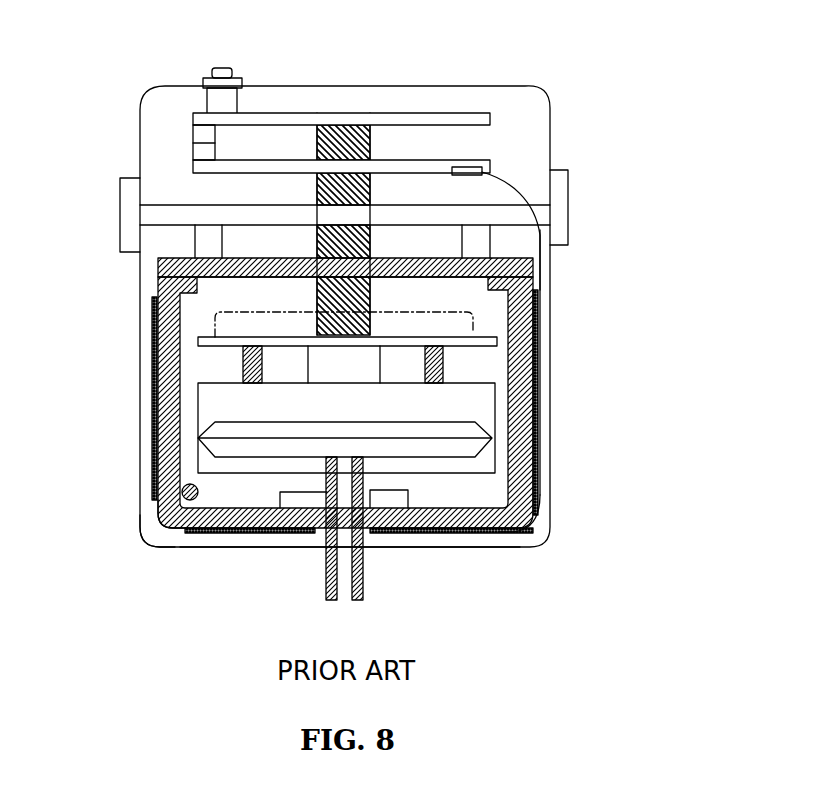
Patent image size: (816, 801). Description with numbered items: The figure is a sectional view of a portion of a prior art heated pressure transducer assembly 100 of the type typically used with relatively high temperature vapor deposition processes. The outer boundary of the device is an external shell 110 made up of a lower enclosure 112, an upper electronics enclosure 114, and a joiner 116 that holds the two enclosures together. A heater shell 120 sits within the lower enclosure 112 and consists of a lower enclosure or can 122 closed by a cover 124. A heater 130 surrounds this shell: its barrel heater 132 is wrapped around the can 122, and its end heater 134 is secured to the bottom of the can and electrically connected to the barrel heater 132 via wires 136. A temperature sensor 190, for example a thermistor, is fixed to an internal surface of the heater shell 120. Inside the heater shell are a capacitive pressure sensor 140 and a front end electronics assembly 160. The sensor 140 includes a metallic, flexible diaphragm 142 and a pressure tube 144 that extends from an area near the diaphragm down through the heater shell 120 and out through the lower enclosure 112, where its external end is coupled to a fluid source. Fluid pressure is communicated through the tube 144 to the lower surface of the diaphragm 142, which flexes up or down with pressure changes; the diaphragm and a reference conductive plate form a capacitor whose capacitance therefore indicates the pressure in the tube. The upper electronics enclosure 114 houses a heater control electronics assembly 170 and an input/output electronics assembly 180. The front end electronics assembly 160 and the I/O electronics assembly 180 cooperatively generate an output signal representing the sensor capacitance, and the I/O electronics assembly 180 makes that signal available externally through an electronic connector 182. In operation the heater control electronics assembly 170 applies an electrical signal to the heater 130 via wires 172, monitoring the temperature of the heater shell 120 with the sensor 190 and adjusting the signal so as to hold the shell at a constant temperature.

The heated pressure transducer assembly 100 is at (113, 407).
The external shell 110 is at (237, 548).
The lower enclosure 112 is at (300, 548).
The upper electronics enclosure 114 is at (323, 85).
The joiner 116 is at (118, 205).
The heater shell 120 is at (165, 545).
The can 122 is at (160, 513).
The cover 124 is at (157, 263).
The heater 130 is at (541, 447).
The barrel heater 132 is at (541, 472).
The end heater 134 is at (476, 535).
The wires 136 is at (536, 528).
The capacitive pressure sensor 140 is at (541, 407).
The diaphragm 142 is at (278, 437).
The pressure tube 144 is at (362, 580).
The front end electronics assembly 160 is at (513, 321).
The heater control electronics assembly 170 is at (462, 157).
The wires 172 is at (550, 256).
The input/output electronics assembly 180 is at (450, 113).
The electronic connector 182 is at (222, 68).
The temperature sensor 190 is at (203, 492).